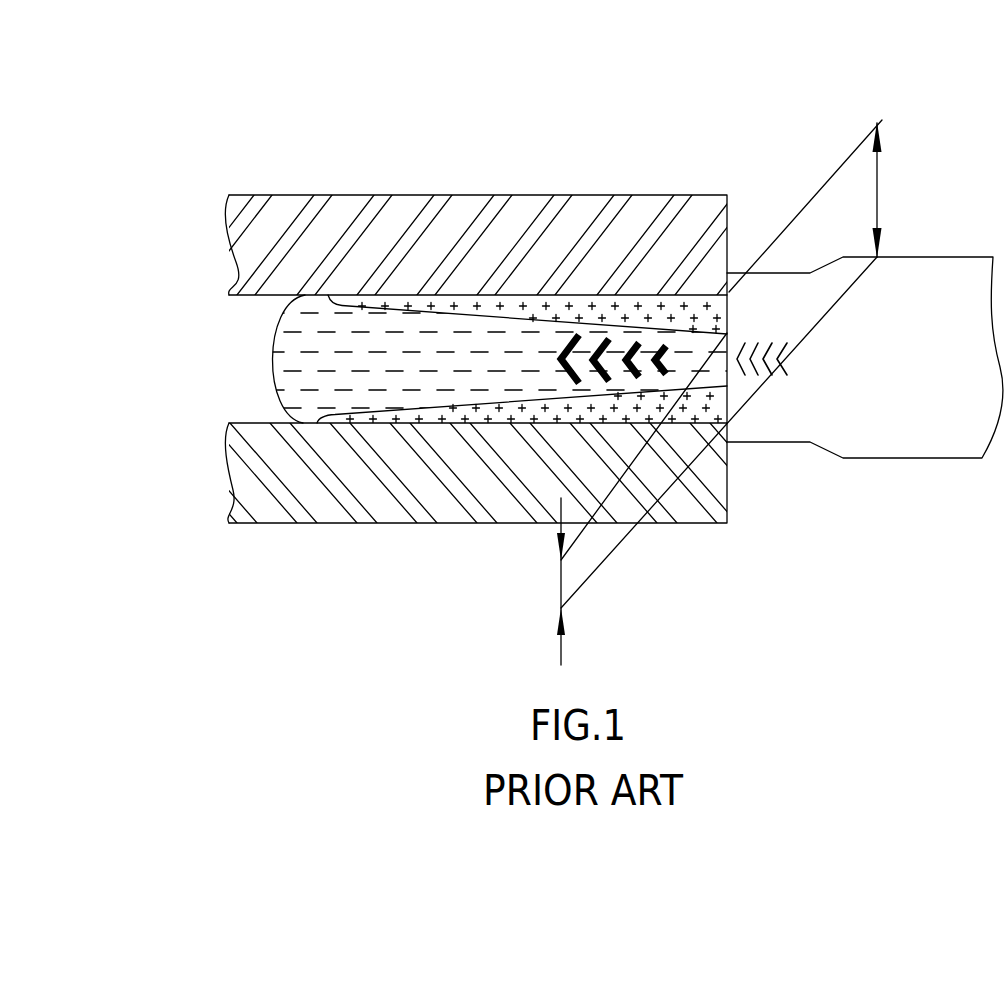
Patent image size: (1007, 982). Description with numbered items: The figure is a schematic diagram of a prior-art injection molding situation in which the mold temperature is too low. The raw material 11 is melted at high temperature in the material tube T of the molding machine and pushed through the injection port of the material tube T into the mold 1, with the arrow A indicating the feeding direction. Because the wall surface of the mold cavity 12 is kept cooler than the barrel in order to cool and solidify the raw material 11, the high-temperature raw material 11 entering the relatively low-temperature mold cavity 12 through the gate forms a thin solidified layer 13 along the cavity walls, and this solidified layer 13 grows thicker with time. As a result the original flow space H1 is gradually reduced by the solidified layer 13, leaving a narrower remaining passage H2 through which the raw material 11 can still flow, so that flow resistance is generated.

The mold 1 is at (262, 132).
The raw material 11 is at (290, 354).
The mold cavity 12 is at (263, 317).
The solidified layer 13 is at (669, 313).
The arrow A is at (563, 347).
The original flow space H1 is at (880, 192).
The height H2 is at (561, 580).
The material tube T is at (883, 458).